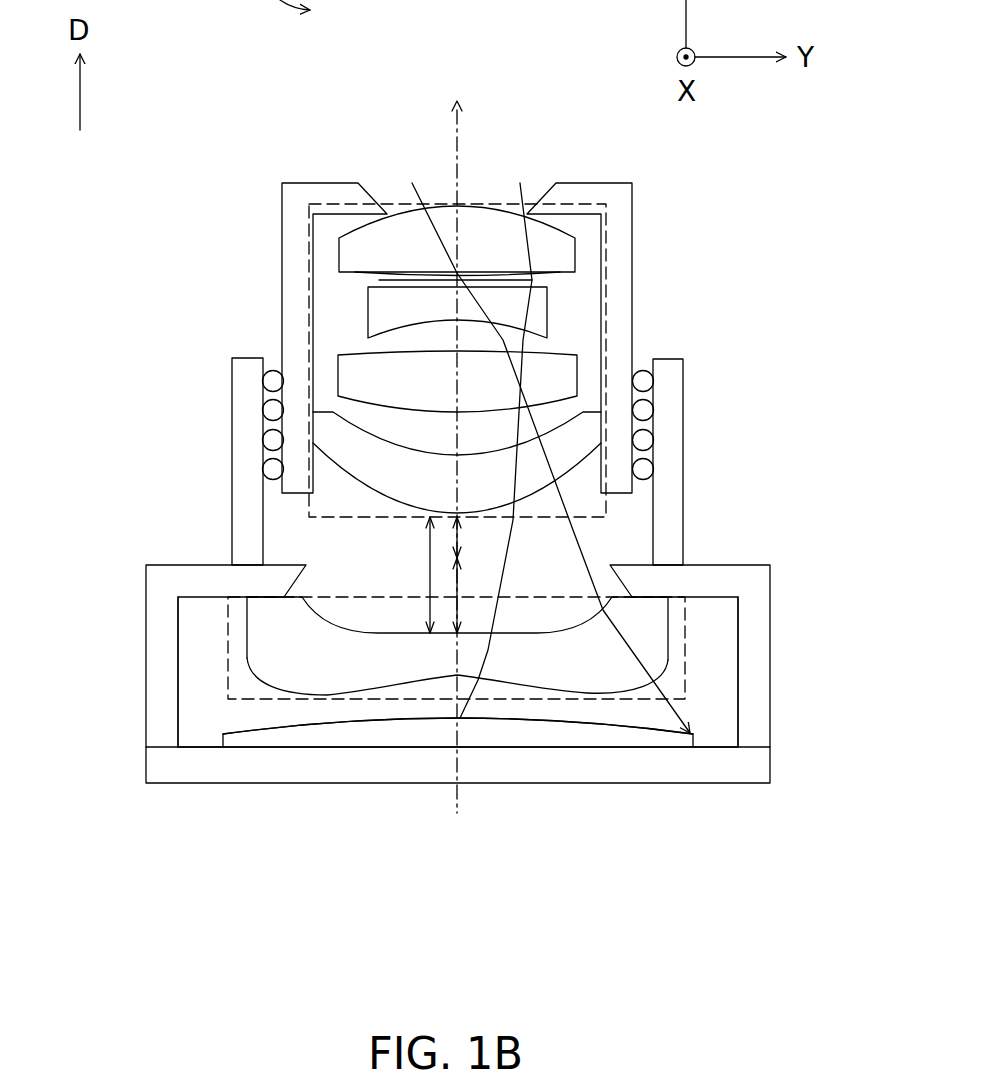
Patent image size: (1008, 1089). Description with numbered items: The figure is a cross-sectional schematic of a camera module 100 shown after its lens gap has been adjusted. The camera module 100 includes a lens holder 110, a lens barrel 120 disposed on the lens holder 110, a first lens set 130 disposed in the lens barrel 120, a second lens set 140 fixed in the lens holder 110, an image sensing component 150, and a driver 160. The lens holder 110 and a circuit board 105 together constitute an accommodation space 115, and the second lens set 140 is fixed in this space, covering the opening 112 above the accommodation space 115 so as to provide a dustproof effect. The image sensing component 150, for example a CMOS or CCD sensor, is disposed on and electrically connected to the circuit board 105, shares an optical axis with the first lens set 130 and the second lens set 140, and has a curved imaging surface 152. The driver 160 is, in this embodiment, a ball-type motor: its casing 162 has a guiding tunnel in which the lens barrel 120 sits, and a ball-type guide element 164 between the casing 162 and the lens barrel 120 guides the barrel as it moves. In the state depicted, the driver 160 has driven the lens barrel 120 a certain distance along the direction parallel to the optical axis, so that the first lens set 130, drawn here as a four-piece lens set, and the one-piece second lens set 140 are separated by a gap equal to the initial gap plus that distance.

The camera module 100 is at (789, 925).
The circuit board 105 is at (757, 763).
The lens holder 110 is at (750, 687).
The opening 112 is at (610, 580).
The accommodation space 115 is at (730, 650).
The lens barrel 120 is at (618, 245).
The first lens set 130 is at (606, 303).
The second lens set 140 is at (685, 618).
The image sensing component 150 is at (675, 745).
The imaging surface 152 is at (672, 718).
The driver 160 is at (534, 459).
The casing 162 is at (673, 467).
The ball-type guide element 164 is at (646, 382).